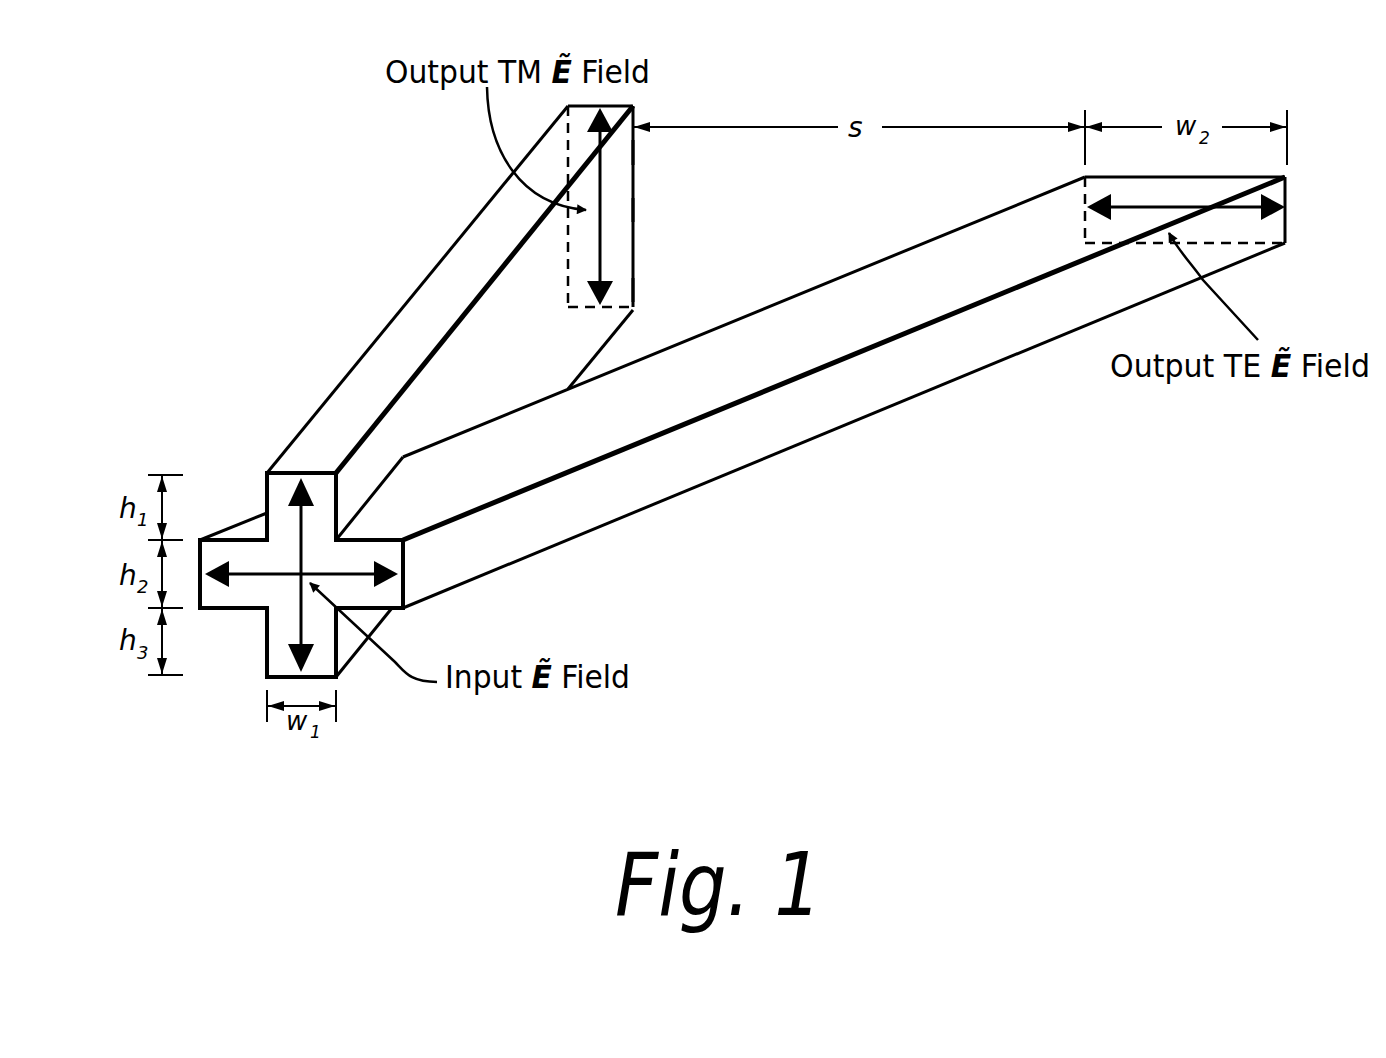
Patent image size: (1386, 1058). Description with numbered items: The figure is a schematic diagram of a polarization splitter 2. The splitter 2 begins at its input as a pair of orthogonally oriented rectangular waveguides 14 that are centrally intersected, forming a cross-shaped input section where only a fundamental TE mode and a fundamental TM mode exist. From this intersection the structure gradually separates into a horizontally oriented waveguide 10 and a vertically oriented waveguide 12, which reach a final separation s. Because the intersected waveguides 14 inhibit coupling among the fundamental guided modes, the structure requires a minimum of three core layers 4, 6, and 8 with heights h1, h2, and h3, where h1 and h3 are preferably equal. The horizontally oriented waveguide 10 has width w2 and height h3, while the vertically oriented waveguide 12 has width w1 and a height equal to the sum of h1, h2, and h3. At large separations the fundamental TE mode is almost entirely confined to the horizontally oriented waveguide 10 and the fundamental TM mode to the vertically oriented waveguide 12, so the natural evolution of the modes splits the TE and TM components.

The polarization splitter 2 is at (717, 422).
The first core layer 4 is at (616, 152).
The second core layer 6 is at (616, 210).
The third core layer 8 is at (629, 290).
The horizontally oriented waveguide 10 is at (930, 363).
The vertically oriented waveguide 12 is at (398, 298).
The orthogonally oriented rectangular waveguides 14 is at (262, 633).